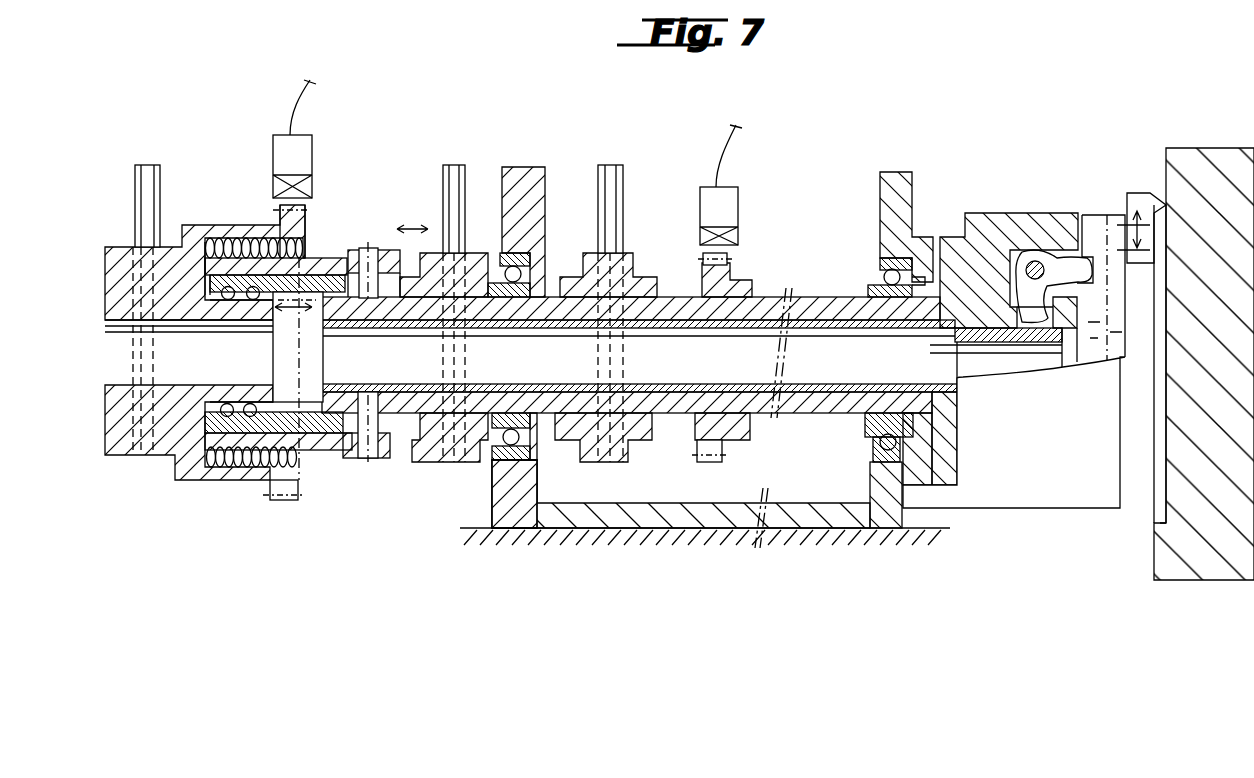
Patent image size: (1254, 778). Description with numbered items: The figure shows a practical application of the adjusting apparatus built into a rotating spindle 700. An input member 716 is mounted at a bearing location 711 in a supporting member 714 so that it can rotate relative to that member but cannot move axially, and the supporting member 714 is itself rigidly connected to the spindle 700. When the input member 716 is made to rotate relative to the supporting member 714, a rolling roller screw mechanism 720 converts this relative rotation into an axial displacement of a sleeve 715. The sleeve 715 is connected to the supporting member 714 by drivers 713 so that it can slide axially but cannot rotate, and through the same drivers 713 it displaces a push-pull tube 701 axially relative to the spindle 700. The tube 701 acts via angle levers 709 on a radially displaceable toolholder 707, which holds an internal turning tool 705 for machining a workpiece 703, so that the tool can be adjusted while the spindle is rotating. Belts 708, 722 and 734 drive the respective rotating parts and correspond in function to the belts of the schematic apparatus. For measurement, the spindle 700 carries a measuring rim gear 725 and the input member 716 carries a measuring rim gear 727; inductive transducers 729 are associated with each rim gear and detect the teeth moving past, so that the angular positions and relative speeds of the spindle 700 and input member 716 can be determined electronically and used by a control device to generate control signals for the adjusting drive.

The spindle 700 is at (837, 297).
The push-pull tube 701 is at (828, 397).
The workpiece 703 is at (1223, 162).
The internal turning tool 705 is at (1143, 193).
The toolholder 707 is at (1098, 217).
The belt 708 is at (613, 193).
The angle levers 709 is at (1043, 255).
The mounting 711 is at (238, 398).
The drivers 713 is at (370, 257).
The supporting member 714 is at (330, 452).
The sleeve 715 is at (330, 258).
The input member 716 is at (188, 465).
The rolling roller screw mechanism 720 is at (248, 240).
The belt 722 is at (453, 165).
The measuring rim gear 725 is at (725, 255).
The measuring rim gear 727 is at (277, 208).
The inductive transducers 729 is at (282, 158).
The belt 734 is at (147, 162).